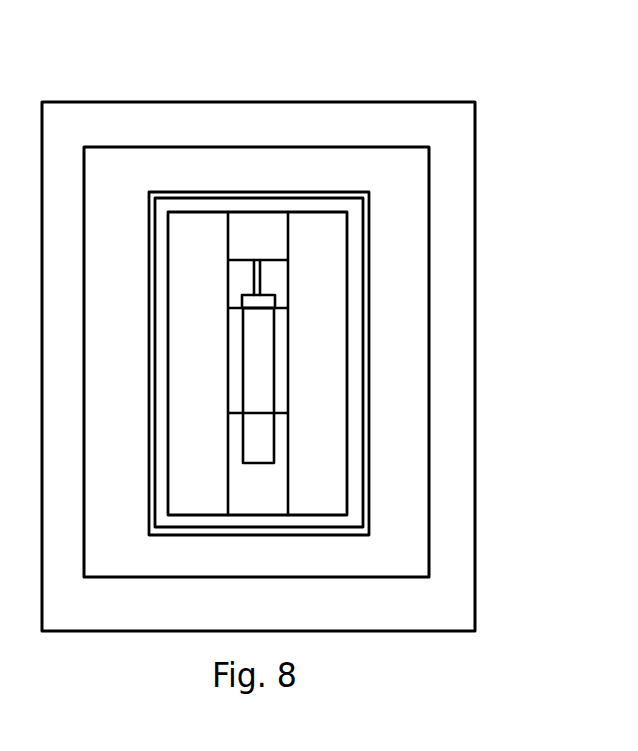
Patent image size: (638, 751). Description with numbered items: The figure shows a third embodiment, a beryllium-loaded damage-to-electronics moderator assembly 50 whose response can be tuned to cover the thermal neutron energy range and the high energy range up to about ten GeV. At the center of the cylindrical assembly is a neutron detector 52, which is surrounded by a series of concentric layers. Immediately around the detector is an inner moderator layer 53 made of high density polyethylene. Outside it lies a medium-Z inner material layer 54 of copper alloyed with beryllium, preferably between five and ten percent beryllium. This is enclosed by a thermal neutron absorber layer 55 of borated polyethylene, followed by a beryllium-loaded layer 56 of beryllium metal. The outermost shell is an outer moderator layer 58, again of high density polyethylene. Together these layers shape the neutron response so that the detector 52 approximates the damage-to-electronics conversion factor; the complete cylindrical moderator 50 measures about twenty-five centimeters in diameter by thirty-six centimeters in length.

The damage-to-electronics moderator assembly 50 is at (311, 102).
The neutron detector 52 is at (258, 322).
The inner moderator layer 53 is at (320, 364).
The medium-Z inner material layer 54 is at (355, 406).
The thermal neutron absorber layer 55 is at (365, 454).
The beryllium-loaded layer 56 is at (400, 507).
The outer moderator layer 58 is at (452, 553).